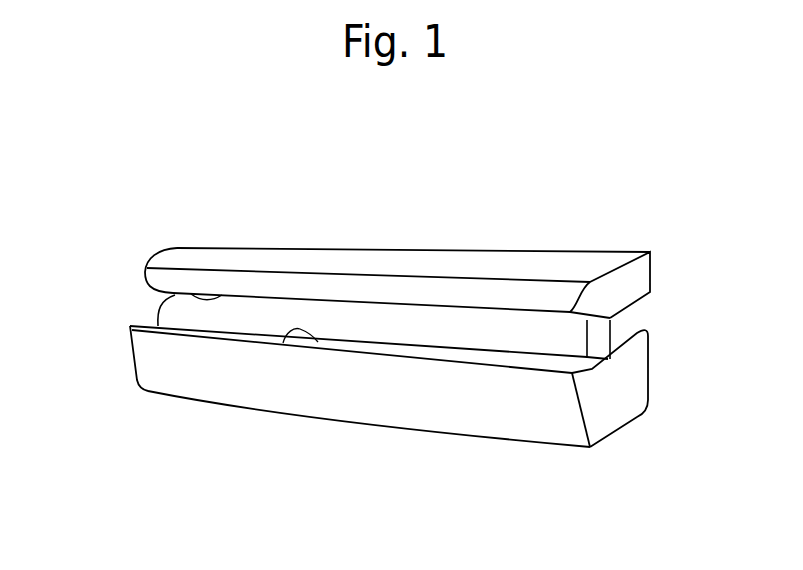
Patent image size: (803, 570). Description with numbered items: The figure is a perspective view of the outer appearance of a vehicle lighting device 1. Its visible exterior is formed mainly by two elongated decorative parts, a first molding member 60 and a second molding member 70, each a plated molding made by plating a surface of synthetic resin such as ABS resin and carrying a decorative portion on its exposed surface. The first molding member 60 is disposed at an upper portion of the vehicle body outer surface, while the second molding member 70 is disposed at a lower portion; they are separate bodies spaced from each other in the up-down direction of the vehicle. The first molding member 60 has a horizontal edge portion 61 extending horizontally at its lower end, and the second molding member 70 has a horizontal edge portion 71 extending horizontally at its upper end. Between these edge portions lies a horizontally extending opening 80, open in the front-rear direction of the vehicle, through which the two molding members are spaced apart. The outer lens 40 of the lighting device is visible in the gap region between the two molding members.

The vehicle lighting device 1 is at (628, 228).
The outer lens 40 is at (362, 317).
The first molding member 60 is at (467, 267).
The horizontal edge portion 61 is at (195, 296).
The second molding member 70 is at (447, 398).
The horizontal edge portion 71 is at (283, 343).
The opening 80 is at (145, 288).